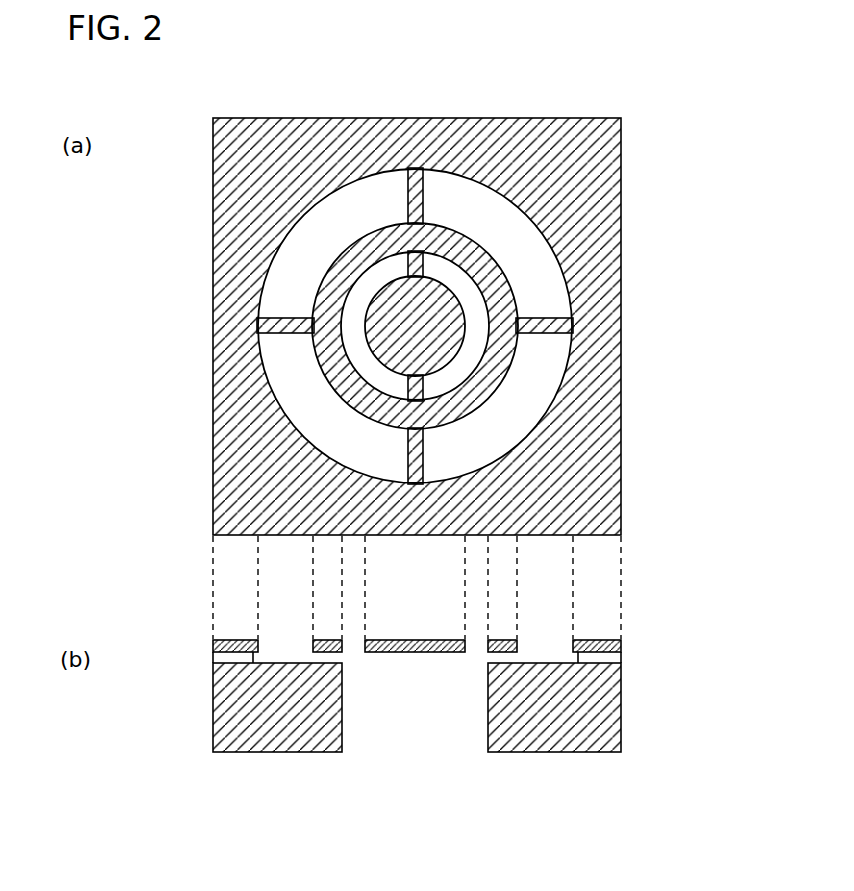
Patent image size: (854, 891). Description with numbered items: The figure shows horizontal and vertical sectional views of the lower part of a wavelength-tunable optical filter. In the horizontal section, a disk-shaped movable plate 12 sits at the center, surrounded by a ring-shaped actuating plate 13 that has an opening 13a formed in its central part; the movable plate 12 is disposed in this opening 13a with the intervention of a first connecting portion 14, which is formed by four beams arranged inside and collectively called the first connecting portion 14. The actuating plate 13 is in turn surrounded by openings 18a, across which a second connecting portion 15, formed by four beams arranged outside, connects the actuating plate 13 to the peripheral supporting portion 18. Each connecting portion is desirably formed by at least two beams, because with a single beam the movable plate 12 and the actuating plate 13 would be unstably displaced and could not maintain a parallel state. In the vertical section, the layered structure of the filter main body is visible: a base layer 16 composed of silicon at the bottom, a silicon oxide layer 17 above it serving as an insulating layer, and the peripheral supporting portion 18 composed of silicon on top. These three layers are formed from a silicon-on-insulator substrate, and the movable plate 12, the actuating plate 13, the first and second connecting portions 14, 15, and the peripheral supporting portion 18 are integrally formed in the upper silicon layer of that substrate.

The movable plate 12 is at (430, 290).
The actuating plate 13 is at (333, 268).
The opening 13a is at (357, 305).
The first connecting portion 14 is at (490, 290).
The second connecting portion 15 is at (597, 355).
The base layer 16 is at (622, 715).
The silicon oxide layer 17 is at (622, 659).
The peripheral supporting portion 18 is at (600, 473).
The openings 18a is at (290, 382).